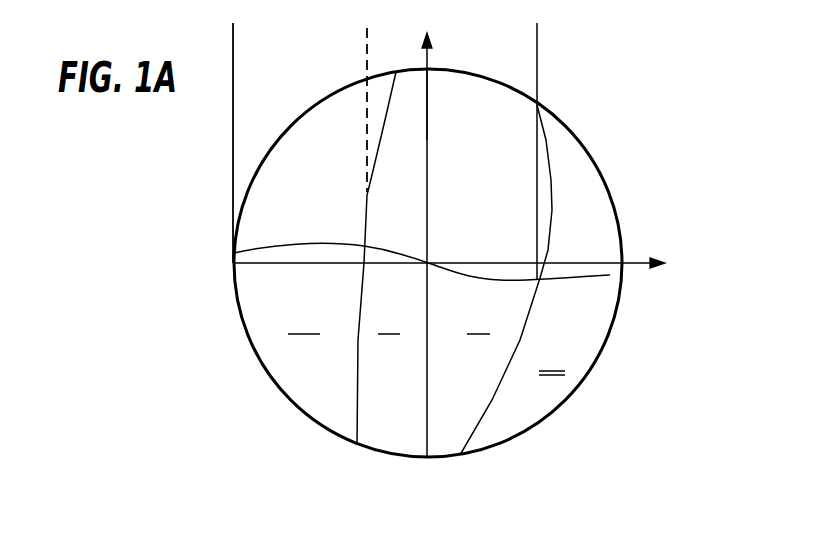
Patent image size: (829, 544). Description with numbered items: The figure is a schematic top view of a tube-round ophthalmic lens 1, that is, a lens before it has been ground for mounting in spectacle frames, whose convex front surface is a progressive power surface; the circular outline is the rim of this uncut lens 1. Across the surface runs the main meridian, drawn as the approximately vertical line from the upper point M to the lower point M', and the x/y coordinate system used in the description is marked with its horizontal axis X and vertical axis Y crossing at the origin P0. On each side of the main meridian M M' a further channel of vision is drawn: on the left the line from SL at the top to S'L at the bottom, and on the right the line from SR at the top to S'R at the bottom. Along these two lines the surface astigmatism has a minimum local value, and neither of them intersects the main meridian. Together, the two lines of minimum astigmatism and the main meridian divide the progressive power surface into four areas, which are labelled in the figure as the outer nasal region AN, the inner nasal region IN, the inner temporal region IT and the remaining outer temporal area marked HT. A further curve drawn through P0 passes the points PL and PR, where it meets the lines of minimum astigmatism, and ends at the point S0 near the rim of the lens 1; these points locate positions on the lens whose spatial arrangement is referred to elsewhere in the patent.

The circle (unit circle boundary) 1 is at (597, 168).
The x axis of the coordinate system X is at (453, 252).
The y axis of the coordinate system Y is at (435, 83).
The upper end point of the main meridian M is at (435, 104).
The lower end point of the main meridian M' is at (441, 399).
The origin point P0 is at (429, 240).
The left point PL is at (317, 227).
The right point PR is at (502, 295).
The upper end point of the left line of minimum surface astigmatism SL is at (382, 149).
The lower end point of the left line of minimum surface astigmatism S'L is at (357, 376).
The upper end point of the right line of minimum surface astigmatism SR is at (552, 177).
The lower end point of the right line of minimum surface astigmatism S'R is at (500, 386).
The point S0 on circle S0 is at (596, 287).
The outer nasal region AN is at (304, 322).
The inner nasal region IN is at (389, 322).
The inner temporal region IT is at (478, 322).
The region HT is at (552, 360).